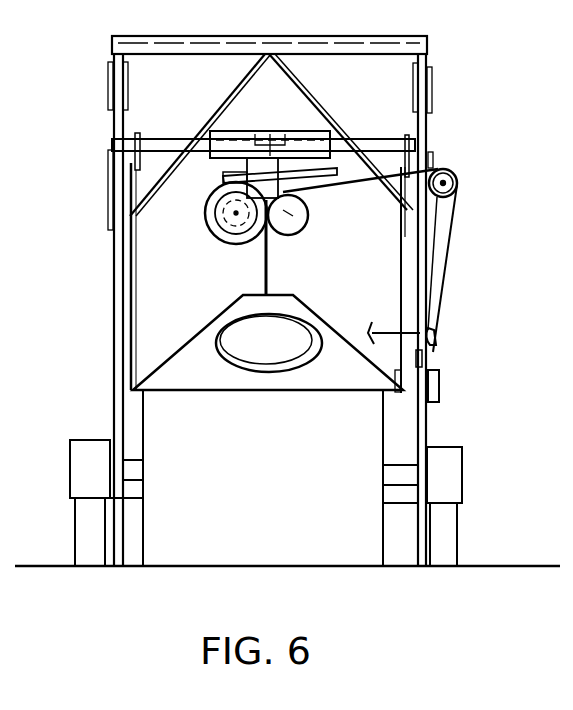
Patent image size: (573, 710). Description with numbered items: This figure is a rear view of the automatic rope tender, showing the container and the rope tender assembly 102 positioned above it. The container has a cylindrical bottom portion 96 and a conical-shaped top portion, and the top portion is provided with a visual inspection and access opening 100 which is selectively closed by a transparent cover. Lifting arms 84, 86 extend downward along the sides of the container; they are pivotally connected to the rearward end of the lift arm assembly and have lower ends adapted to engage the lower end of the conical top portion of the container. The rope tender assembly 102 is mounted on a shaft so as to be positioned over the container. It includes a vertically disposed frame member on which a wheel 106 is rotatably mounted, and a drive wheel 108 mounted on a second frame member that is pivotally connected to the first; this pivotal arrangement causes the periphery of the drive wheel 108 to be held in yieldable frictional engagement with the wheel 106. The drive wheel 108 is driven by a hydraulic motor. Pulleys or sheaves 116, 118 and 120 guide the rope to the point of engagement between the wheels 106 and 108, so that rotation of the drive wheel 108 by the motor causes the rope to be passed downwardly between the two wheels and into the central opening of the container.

The lifting arm 84 is at (130, 292).
The lifting arm 86 is at (400, 273).
The cylindrical bottom portion 96 is at (244, 516).
The visual inspection and access opening 100 is at (259, 337).
The rope tender assembly 102 is at (283, 126).
The wheel 106 is at (303, 223).
The drive wheel 108 is at (212, 232).
The pulley 116 is at (438, 333).
The pulley 118 is at (442, 383).
The pulley 120 is at (452, 188).